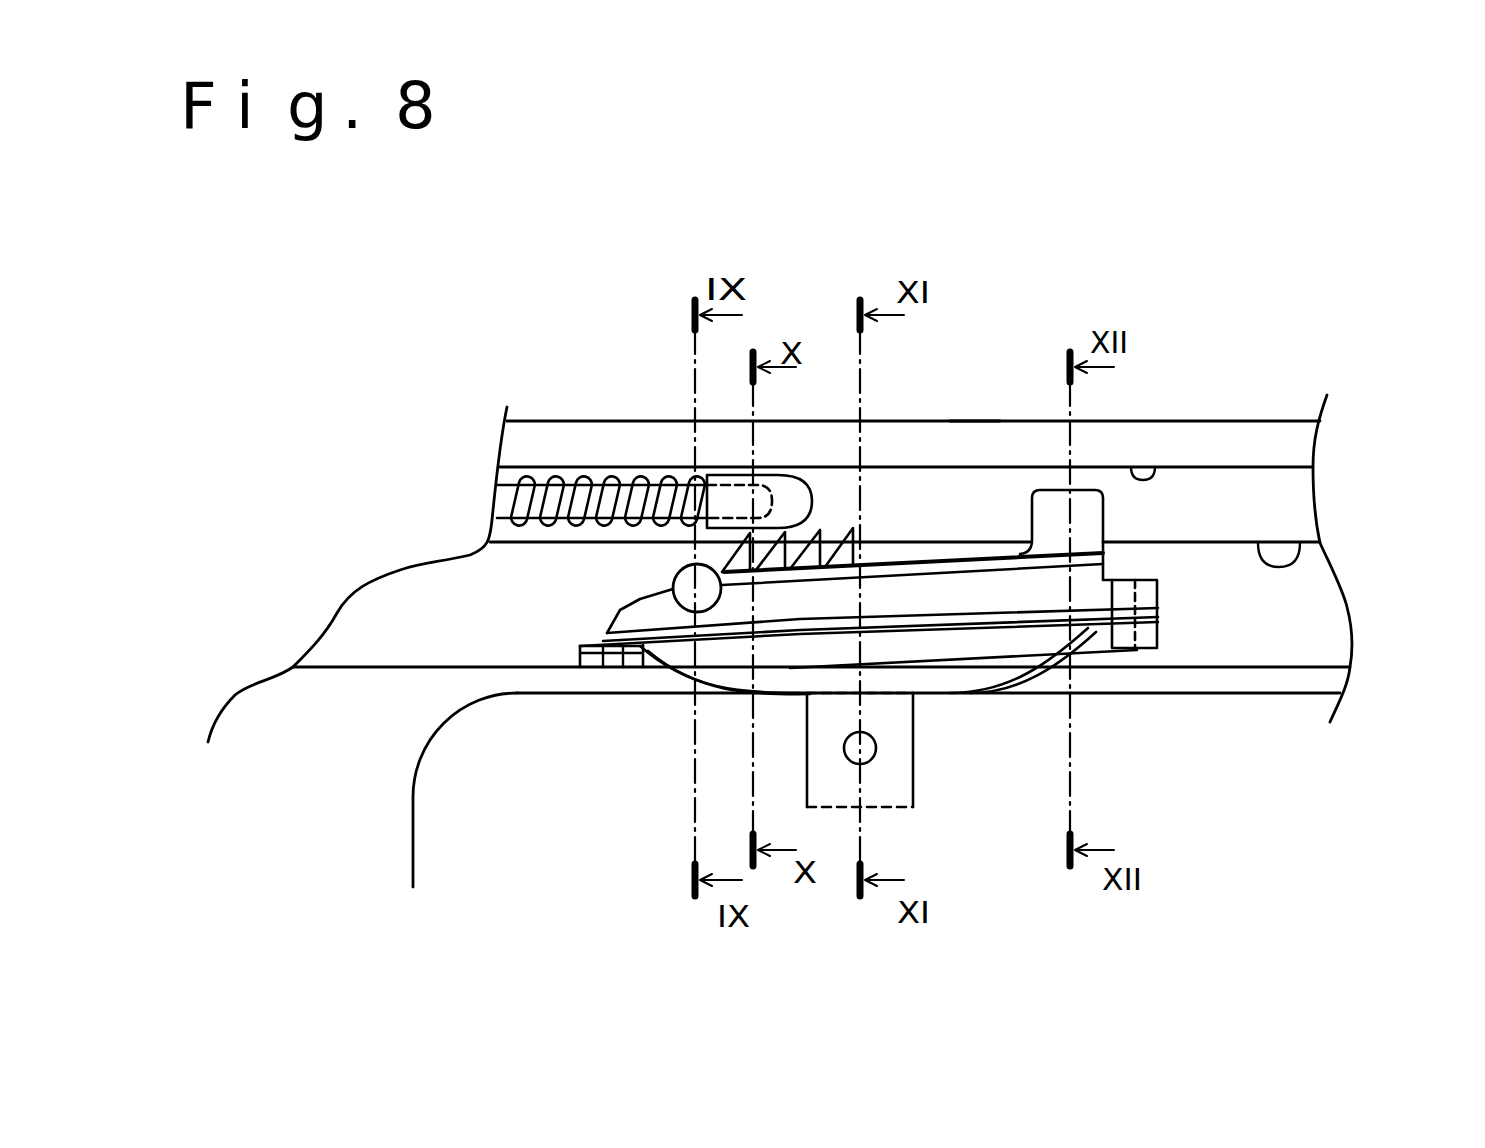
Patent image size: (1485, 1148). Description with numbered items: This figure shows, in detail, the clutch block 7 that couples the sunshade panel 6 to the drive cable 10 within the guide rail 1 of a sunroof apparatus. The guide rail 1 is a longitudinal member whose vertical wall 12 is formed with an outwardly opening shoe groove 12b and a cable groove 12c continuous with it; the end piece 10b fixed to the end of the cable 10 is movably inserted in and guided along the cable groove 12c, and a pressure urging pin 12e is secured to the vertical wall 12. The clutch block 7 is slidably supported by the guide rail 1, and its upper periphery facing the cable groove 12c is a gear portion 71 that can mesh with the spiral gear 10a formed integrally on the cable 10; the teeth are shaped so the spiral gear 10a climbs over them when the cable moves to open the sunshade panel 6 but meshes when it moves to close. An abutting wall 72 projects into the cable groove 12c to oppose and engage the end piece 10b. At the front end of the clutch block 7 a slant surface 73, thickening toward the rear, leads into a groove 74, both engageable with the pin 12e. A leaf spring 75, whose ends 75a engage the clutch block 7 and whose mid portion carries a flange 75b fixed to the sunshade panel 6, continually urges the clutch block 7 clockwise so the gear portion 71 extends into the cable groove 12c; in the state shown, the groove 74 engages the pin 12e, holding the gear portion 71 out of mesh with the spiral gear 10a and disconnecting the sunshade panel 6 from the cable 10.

The guide rail 1 is at (1263, 419).
The sunshade panel 6 is at (463, 802).
The clutch block 7 is at (1135, 566).
The cable 10 is at (573, 467).
The spiral gear 10a is at (615, 470).
The end piece 10b is at (782, 488).
The vertical wall 12 is at (950, 450).
The shoe groove 12b is at (1300, 543).
The cable groove 12c is at (1128, 467).
The pressure urging pin 12e is at (660, 612).
The gear portion 71 is at (845, 530).
The abutting wall 72 is at (1053, 510).
The slant surface 73 is at (624, 607).
The groove 74 is at (686, 613).
The leaf spring 75 is at (1017, 687).
The leaf spring end portion 75a is at (610, 667).
The flange 75b is at (895, 792).